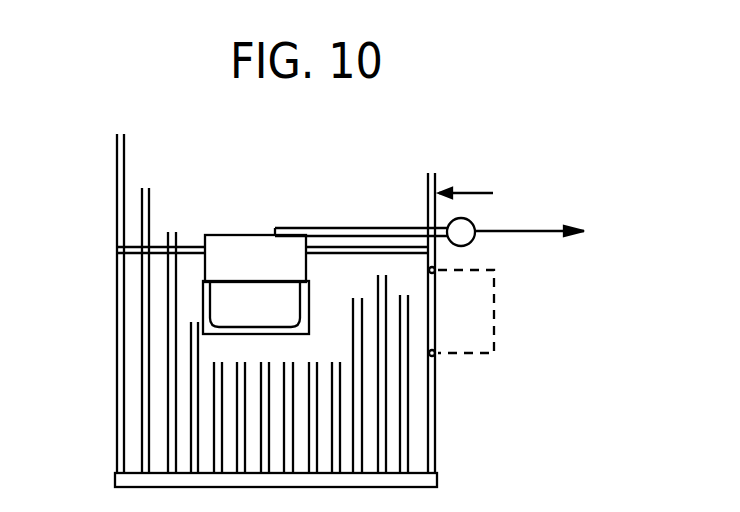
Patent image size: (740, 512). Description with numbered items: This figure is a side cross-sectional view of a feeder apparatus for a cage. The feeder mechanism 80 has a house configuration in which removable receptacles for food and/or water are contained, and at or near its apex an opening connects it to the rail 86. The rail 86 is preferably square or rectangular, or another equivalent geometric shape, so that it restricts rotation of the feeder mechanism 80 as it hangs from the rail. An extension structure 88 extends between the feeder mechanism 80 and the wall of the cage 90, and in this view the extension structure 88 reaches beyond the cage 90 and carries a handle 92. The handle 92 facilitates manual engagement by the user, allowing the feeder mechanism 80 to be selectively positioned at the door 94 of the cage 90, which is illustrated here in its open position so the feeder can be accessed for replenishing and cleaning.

The feeder mechanism 80 is at (197, 311).
The rail 86 is at (157, 245).
The extension structure 88 is at (347, 227).
The cage 90 is at (483, 194).
The handle 92 is at (476, 241).
The door 94 is at (469, 354).